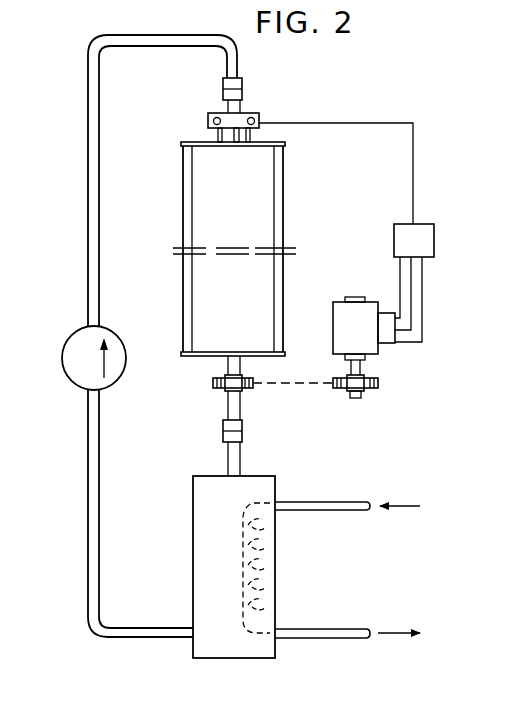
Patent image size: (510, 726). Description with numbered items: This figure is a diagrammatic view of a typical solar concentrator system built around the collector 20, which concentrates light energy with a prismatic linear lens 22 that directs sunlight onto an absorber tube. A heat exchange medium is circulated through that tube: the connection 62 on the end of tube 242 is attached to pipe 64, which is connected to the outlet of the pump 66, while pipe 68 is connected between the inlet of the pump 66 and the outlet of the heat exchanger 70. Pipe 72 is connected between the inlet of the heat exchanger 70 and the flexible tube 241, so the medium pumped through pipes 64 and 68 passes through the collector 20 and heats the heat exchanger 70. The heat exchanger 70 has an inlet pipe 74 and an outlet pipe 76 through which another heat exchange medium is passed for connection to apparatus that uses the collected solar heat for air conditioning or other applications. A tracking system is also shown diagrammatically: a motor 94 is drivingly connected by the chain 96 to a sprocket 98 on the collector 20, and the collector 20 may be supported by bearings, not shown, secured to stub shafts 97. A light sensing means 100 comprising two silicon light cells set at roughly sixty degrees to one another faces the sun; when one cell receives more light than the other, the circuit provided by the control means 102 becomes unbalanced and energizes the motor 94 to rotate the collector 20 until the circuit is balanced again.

The collector 20 is at (290, 211).
The prismatic linear lens 22 is at (256, 247).
The tube end 242 is at (228, 137).
The flexible tube 241 is at (241, 400).
The connection 62 is at (243, 88).
The pipe 64 is at (100, 166).
The pump 66 is at (126, 368).
The pipe 68 is at (100, 472).
The heat exchanger 70 is at (192, 535).
The pipe 72 is at (241, 462).
The inlet pipe 74 is at (330, 502).
The outlet pipe 76 is at (336, 629).
The motor 94 is at (333, 322).
The chain 96 is at (300, 381).
The stub shafts 97 is at (228, 364).
The sprocket 98 is at (219, 385).
The light sensing means 100 is at (259, 117).
The control means 102 is at (434, 243).